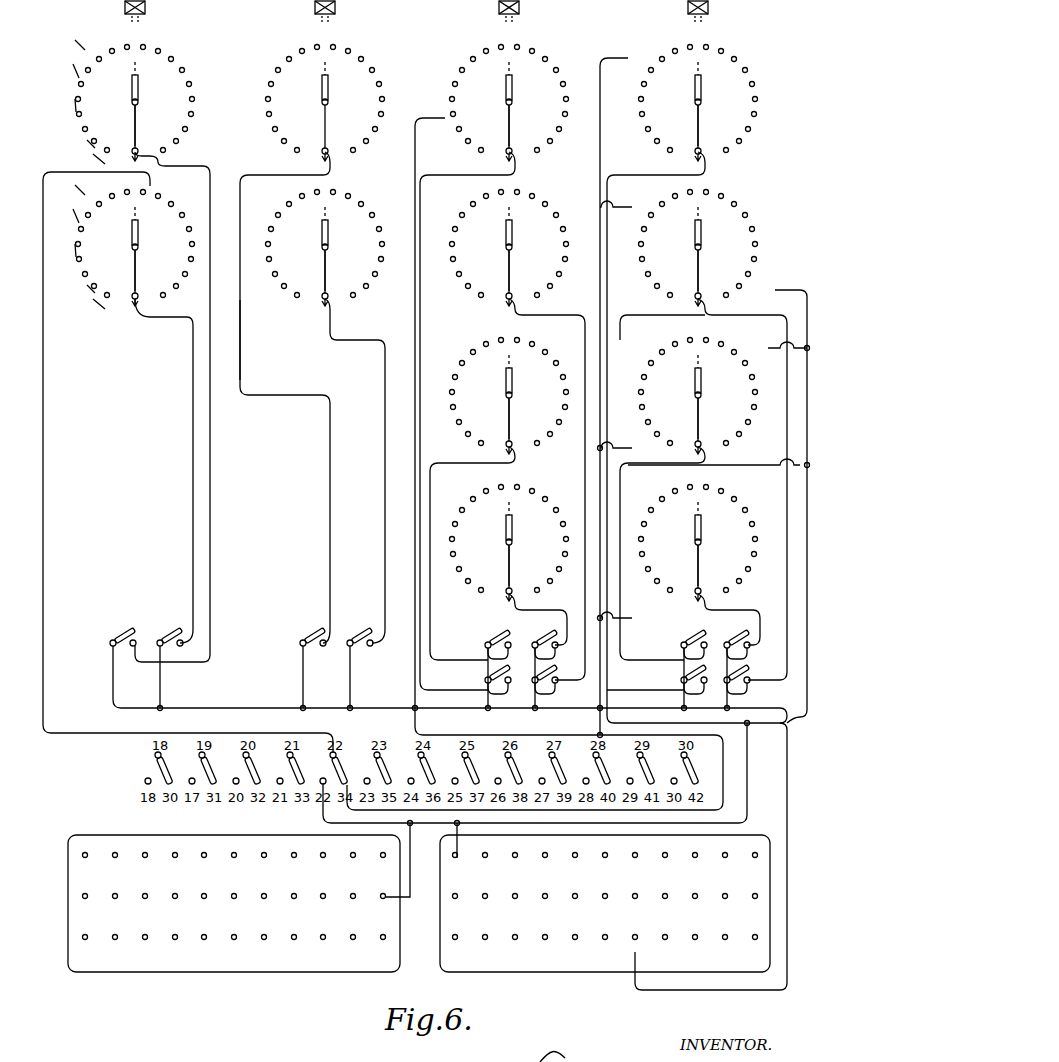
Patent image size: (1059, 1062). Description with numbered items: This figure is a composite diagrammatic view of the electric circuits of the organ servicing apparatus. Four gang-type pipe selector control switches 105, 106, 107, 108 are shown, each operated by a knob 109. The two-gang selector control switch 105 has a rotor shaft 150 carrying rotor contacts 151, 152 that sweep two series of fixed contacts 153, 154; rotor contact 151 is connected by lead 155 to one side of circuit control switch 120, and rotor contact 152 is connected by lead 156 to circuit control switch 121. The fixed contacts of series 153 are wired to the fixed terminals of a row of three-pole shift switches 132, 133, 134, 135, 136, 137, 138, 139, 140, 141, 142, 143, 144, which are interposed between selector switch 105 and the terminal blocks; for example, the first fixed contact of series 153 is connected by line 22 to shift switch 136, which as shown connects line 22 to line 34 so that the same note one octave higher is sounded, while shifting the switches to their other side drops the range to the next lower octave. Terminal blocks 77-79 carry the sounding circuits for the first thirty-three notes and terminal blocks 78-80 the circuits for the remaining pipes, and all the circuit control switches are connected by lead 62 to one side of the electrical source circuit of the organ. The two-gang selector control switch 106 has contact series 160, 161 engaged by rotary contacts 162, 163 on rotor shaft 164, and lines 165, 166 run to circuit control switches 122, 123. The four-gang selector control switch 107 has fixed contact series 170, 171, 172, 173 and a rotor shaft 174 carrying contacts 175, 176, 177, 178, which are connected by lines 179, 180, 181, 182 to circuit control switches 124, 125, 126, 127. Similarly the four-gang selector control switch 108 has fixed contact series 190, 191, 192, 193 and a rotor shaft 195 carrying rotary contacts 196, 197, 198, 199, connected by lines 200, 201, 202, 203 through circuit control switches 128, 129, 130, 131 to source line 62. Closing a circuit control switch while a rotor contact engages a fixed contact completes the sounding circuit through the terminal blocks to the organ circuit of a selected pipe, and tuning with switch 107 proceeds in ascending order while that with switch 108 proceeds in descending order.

The pipe selector control switch 105 is at (66, 40).
The pipe selector control switch 106 is at (286, 52).
The pipe selector control switch 107 is at (451, 50).
The pipe selector control switch 108 is at (637, 40).
The knob 109 is at (145, 10).
The rotor shaft 150 is at (140, 92).
The rotor contact 151 is at (137, 120).
The rotor contact 152 is at (137, 266).
The series of fixed contacts 153 is at (124, 98).
The series of fixed contacts 154 is at (124, 243).
The lead 155 is at (192, 164).
The lead 156 is at (186, 318).
The contact series 160 is at (316, 109).
The contact series 161 is at (314, 254).
The rotary contact 162 is at (327, 120).
The rotary contact 163 is at (327, 266).
The rotor shaft 164 is at (330, 92).
The line 165 is at (315, 572).
The line 166 is at (379, 340).
The fixed contact series 170 is at (509, 98).
The fixed contact series 171 is at (509, 243).
The fixed contact series 172 is at (509, 391).
The fixed contact series 173 is at (509, 538).
The rotor shaft 174 is at (514, 92).
The rotary contact 175 is at (511, 120).
The rotary contact 176 is at (511, 266).
The rotary contact 177 is at (511, 409).
The rotary contact 178 is at (511, 557).
The line 179 is at (445, 684).
The line 180 is at (543, 316).
The line 181 is at (515, 452).
The line 182 is at (538, 620).
The fixed contact series 190 is at (698, 98).
The fixed contact series 191 is at (698, 243).
The fixed contact series 192 is at (698, 391).
The fixed contact series 193 is at (698, 538).
The rotor shaft 195 is at (703, 92).
The rotary contact 196 is at (700, 121).
The rotary contact 197 is at (700, 266).
The rotary contact 198 is at (700, 409).
The rotary contact 199 is at (700, 557).
The line 200 is at (706, 150).
The line 201 is at (706, 294).
The line 202 is at (706, 442).
The line 203 is at (736, 588).
The circuit control switch 120 is at (123, 634).
The circuit control switch 121 is at (174, 634).
The circuit control switch 122 is at (312, 634).
The circuit control switch 123 is at (364, 634).
The circuit control switch 124 is at (486, 679).
The circuit control switch 125 is at (554, 678).
The circuit control switch 126 is at (494, 640).
The circuit control switch 127 is at (544, 640).
The circuit control switch 128 is at (682, 678).
The circuit control switch 129 is at (746, 678).
The circuit control switch 130 is at (690, 640).
The circuit control switch 131 is at (736, 640).
The shift switch 132 is at (153, 771).
The shift switch 133 is at (197, 771).
The shift switch 134 is at (241, 771).
The shift switch 135 is at (285, 771).
The shift switch 136 is at (328, 771).
The shift switch 137 is at (372, 771).
The shift switch 138 is at (416, 771).
The shift switch 139 is at (460, 771).
The shift switch 140 is at (503, 771).
The shift switch 141 is at (547, 771).
The shift switch 142 is at (591, 771).
The shift switch 143 is at (635, 771).
The shift switch 144 is at (679, 771).
The line 22 is at (43, 692).
The line 34 is at (444, 740).
The lead 62 is at (158, 688).
The terminal blocks 77-79 is at (230, 973).
The terminal blocks 78-80 is at (580, 973).